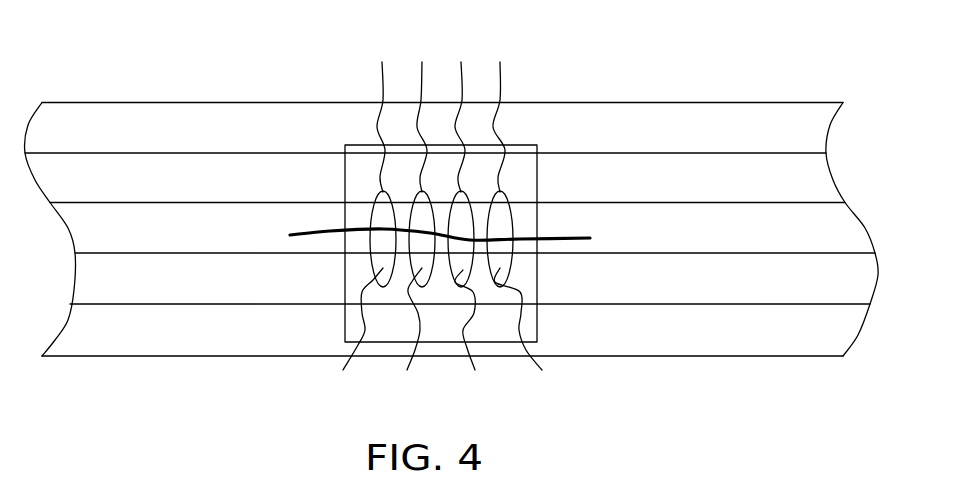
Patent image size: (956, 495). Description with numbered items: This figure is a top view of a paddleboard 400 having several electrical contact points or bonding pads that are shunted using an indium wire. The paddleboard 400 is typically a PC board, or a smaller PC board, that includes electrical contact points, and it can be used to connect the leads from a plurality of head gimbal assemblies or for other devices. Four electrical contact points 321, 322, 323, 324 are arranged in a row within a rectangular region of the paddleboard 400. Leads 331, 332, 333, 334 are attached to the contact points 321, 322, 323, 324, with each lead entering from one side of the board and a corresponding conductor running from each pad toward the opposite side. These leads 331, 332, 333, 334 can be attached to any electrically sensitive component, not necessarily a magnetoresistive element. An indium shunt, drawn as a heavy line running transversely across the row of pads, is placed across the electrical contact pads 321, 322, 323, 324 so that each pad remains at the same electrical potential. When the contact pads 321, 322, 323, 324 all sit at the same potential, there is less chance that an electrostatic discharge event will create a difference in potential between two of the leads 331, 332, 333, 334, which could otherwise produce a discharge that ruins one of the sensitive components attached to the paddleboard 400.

The electrical contact point 321 is at (350, 336).
The electrical contact point 322 is at (404, 336).
The electrical contact point 323 is at (476, 337).
The electrical contact point 324 is at (530, 336).
The lead 331 is at (380, 83).
The lead 332 is at (422, 78).
The lead 333 is at (460, 78).
The lead 334 is at (500, 83).
The paddleboard 400 is at (527, 282).